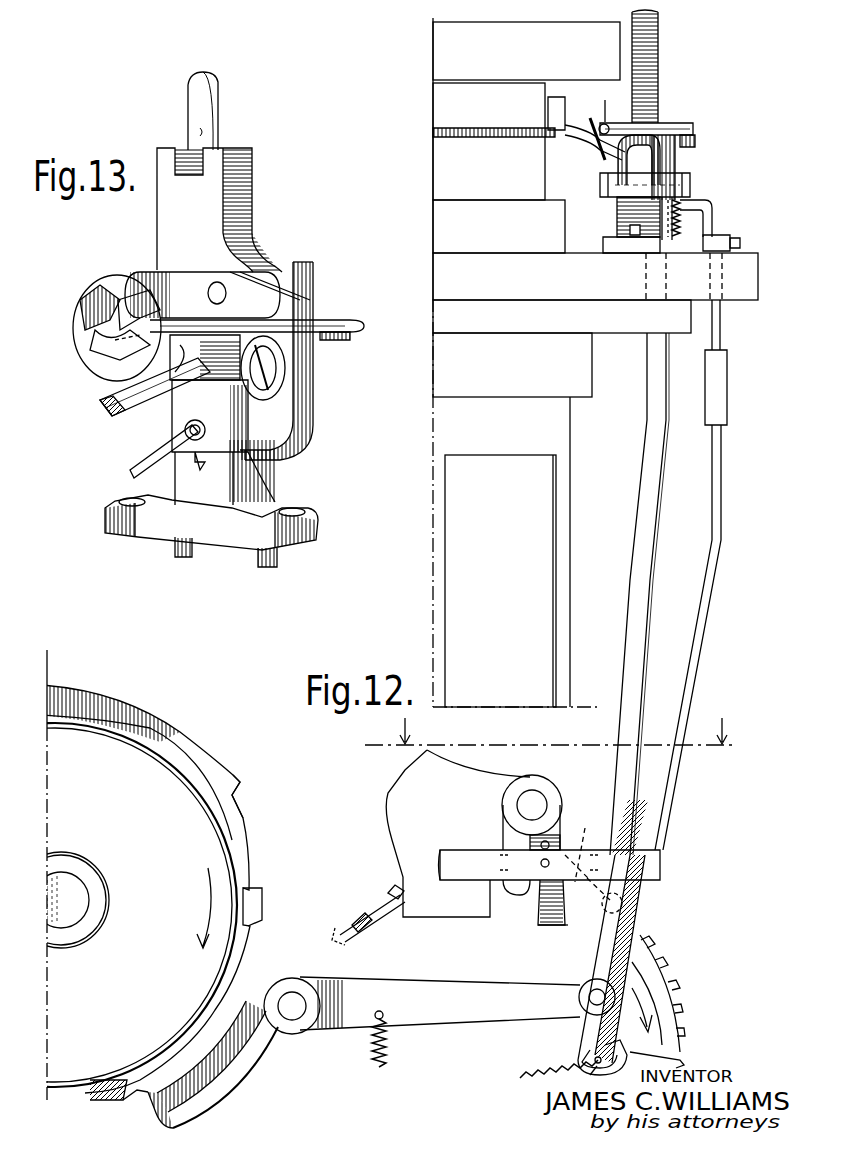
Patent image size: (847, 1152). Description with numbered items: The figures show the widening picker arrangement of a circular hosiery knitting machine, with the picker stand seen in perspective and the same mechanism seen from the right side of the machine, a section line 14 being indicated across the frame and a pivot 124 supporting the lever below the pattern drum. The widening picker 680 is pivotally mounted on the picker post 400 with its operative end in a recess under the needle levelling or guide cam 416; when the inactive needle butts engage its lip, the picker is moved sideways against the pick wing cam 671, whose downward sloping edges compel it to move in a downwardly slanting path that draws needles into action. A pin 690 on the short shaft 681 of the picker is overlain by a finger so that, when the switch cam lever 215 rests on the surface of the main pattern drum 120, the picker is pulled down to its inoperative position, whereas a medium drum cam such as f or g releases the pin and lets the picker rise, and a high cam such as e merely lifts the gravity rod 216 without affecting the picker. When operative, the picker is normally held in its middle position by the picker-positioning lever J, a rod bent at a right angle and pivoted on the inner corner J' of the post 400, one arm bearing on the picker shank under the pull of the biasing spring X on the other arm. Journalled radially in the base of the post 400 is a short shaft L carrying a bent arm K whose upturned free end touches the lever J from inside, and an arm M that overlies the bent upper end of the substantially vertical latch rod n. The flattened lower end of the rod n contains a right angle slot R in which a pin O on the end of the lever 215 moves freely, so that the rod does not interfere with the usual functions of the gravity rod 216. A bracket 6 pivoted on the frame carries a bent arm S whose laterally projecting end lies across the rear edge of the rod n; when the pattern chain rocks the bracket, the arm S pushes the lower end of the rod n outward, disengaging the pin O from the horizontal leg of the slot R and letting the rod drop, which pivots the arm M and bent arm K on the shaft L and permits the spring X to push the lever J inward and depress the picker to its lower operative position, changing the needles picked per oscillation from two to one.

In FIG. 13, the picker post 400 is at (246, 243).
In FIG. 12, the picker post 400 is at (660, 122).
In FIG. 13, the needle levelling or guide cam 416 is at (108, 297).
In FIG. 13, the pick wing cam 671 is at (100, 343).
In FIG. 12, the pick wing cam 671 is at (593, 100).
In FIG. 13, the widening picker 680 is at (110, 400).
In FIG. 12, the widening picker 680 is at (585, 148).
In FIG. 13, the short shaft 681 is at (268, 372).
In FIG. 13, the pin 690 is at (140, 462).
In FIG. 13, the picker-positioning lever J is at (257, 310).
In FIG. 12, the picker-positioning lever J is at (656, 118).
In FIG. 12, the inner corner of the down pick post J' is at (646, 79).
In FIG. 13, the biasing spring X is at (330, 338).
In FIG. 12, the biasing spring X is at (698, 141).
In FIG. 13, the bent arm K is at (312, 375).
In FIG. 12, the bent arm K is at (620, 185).
In FIG. 13, the short shaft L is at (178, 448).
In FIG. 12, the short shaft L is at (695, 190).
In FIG. 12, the arm M is at (683, 176).
In FIG. 12, the latch bar or rod n is at (720, 210).
In FIG. 12, the gravity rod 216 is at (650, 420).
In FIG. 12, the section line 14 is at (563, 737).
In FIG. 12, the bracket 6 is at (593, 860).
In FIG. 12, the bent arm S is at (548, 925).
In FIG. 12, the pin O is at (585, 985).
In FIG. 12, the right angle slot R is at (615, 1043).
In FIG. 12, the main pattern drum 120 is at (125, 875).
In FIG. 12, the drum cam g is at (240, 800).
In FIG. 12, the drum cam f is at (262, 888).
In FIG. 12, the pivot 124 is at (291, 1000).
In FIG. 12, the switch cam lever 215 is at (245, 1072).
In FIG. 12, the drum cam e is at (147, 1088).